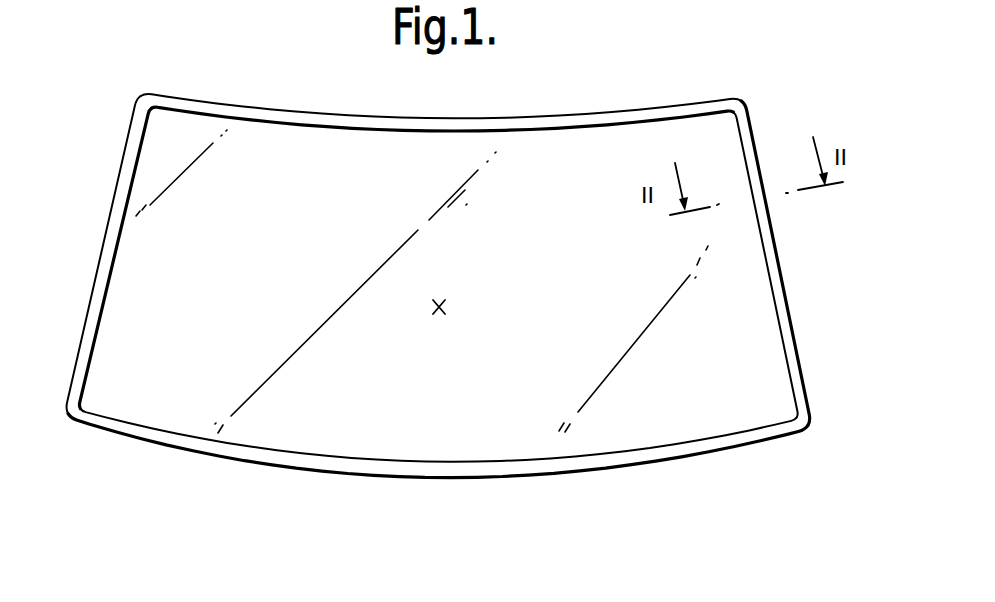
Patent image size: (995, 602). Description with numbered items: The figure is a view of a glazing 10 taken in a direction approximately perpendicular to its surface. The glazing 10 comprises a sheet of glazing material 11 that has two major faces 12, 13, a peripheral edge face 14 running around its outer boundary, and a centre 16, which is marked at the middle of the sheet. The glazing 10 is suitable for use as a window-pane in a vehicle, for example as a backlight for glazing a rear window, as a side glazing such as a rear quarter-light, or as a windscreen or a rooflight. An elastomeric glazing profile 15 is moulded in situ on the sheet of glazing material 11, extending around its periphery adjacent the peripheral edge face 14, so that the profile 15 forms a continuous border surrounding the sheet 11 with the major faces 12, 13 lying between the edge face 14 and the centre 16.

The glazing 10 is at (522, 100).
The sheet of glazing material 11 is at (617, 143).
The major face 12 is at (588, 430).
The major face 13 is at (645, 425).
The peripheral edge face 14 is at (110, 193).
The elastomeric glazing profile 15 is at (215, 110).
The centre 16 is at (440, 298).